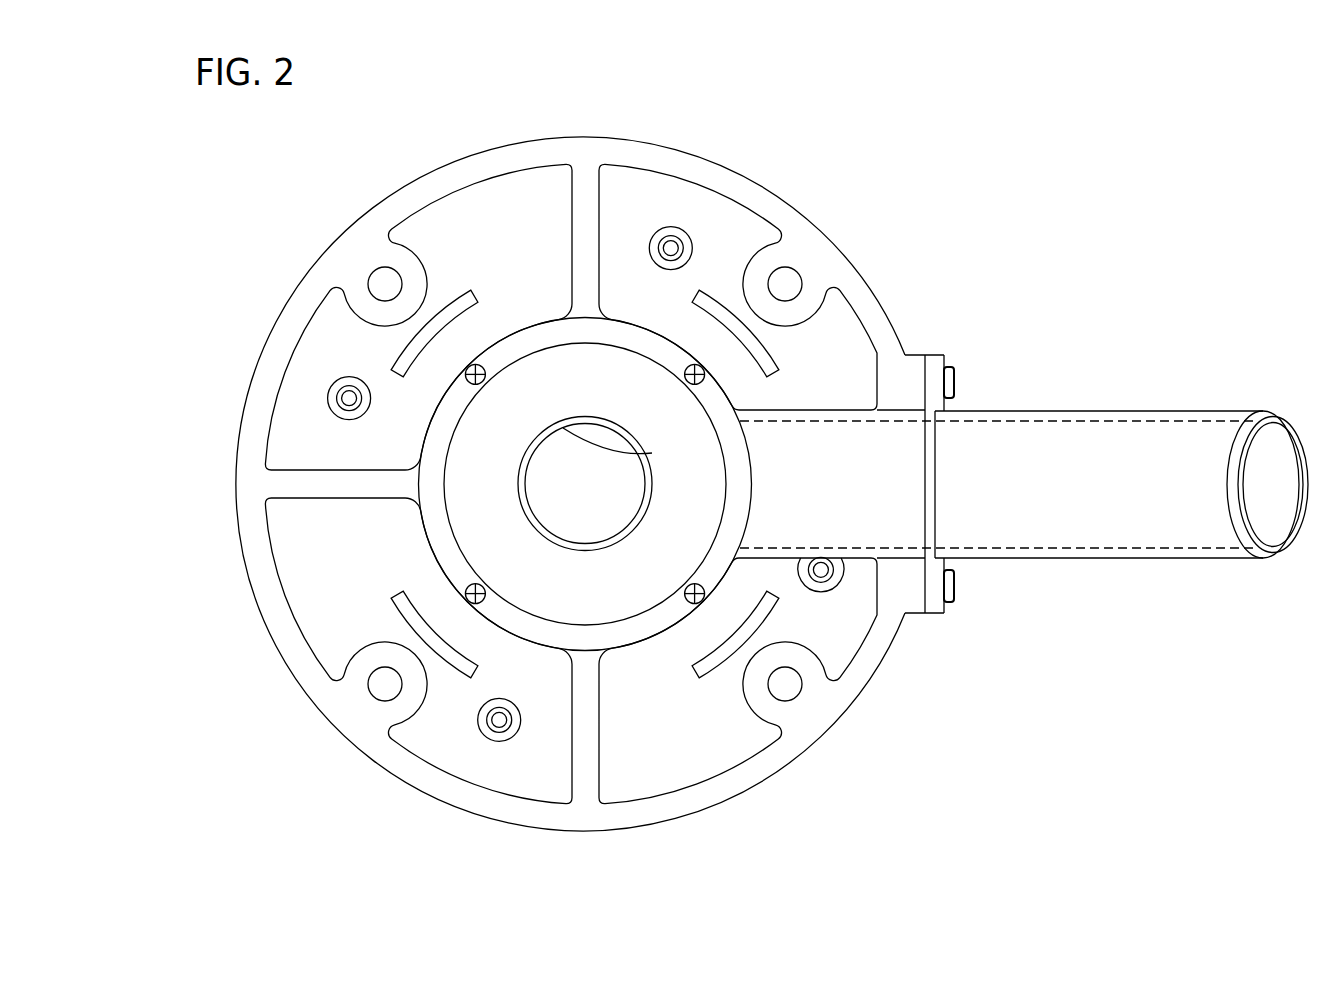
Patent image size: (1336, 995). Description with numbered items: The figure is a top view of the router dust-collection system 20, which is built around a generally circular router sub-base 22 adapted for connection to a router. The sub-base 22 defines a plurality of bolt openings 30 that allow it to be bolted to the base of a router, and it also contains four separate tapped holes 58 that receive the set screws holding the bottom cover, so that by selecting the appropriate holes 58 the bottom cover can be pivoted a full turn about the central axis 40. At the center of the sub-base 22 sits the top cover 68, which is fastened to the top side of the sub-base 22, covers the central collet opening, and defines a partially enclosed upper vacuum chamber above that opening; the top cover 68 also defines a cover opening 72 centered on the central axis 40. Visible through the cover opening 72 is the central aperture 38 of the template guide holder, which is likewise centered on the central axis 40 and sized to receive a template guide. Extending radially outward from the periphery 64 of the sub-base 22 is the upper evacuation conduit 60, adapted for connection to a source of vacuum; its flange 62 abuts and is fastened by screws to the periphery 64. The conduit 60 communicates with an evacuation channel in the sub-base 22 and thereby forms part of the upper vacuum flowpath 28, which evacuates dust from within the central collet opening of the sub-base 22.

The router dust-collection system 20 is at (953, 240).
The router sub-base 22 is at (768, 775).
The upper vacuum flowpath 28 is at (1065, 421).
The bolt openings 30 is at (798, 272).
The central aperture 38 is at (650, 453).
The central axis 40 is at (585, 484).
The tapped holes 58 is at (343, 400).
The upper evacuation conduit 60 is at (1185, 410).
The flange 62 is at (945, 353).
The periphery 64 is at (892, 633).
The top cover 68 is at (532, 353).
The cover opening 72 is at (613, 417).